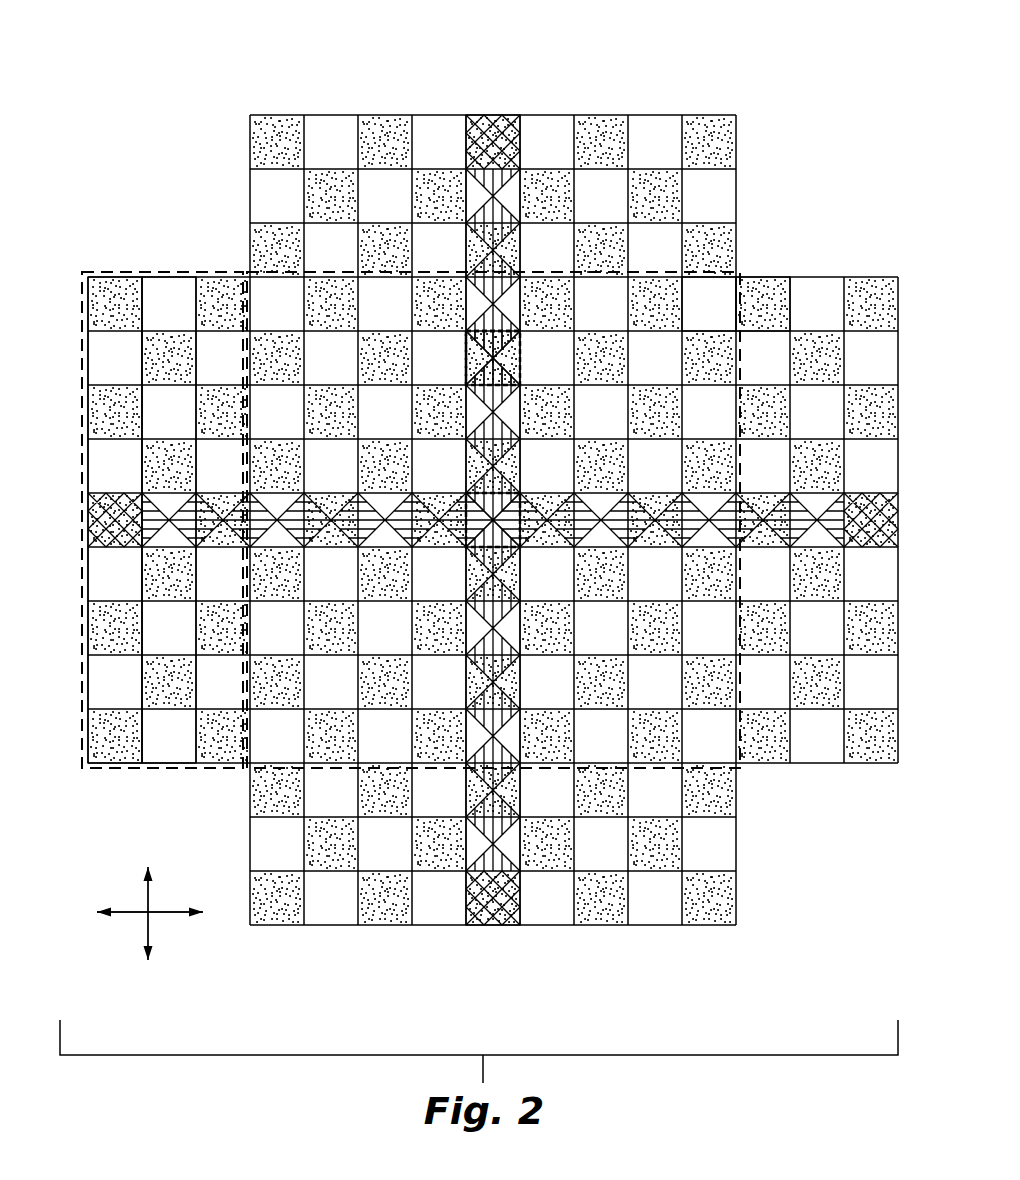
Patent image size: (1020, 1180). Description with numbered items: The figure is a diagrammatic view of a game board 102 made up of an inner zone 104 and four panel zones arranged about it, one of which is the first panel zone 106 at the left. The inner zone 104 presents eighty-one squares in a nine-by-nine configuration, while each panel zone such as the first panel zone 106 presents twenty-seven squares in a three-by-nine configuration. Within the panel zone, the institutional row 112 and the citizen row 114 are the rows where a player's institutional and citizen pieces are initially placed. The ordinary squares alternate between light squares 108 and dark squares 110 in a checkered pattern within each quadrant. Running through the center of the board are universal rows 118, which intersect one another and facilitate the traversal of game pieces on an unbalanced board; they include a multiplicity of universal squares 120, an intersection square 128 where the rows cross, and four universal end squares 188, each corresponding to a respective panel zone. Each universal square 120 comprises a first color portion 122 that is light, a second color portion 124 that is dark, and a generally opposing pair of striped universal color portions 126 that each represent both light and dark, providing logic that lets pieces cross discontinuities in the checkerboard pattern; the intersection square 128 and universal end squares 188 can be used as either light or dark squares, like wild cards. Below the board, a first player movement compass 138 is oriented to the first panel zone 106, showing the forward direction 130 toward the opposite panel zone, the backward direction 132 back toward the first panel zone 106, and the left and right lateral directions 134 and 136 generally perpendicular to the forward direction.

The game board 102 is at (138, 73).
The inner zone 104 is at (277, 768).
The first panel zone 106 is at (127, 768).
The light square 108 is at (757, 287).
The dark square 110 is at (717, 293).
The institutional row 112 is at (117, 258).
The citizen row 114 is at (172, 258).
The universal rows 118 is at (493, 110).
The universal square 120 is at (466, 331).
The first color portion 122 is at (518, 360).
The second color portion 124 is at (466, 353).
The universal color portions 126 is at (497, 372).
The intersection square 128 is at (488, 490).
The forward direction 130 is at (180, 913).
The backward direction 132 is at (118, 913).
The left lateral direction 134 is at (150, 900).
The right lateral direction 136 is at (150, 930).
The first player movement compass 138 is at (237, 965).
The universal end squares 188 is at (507, 113).